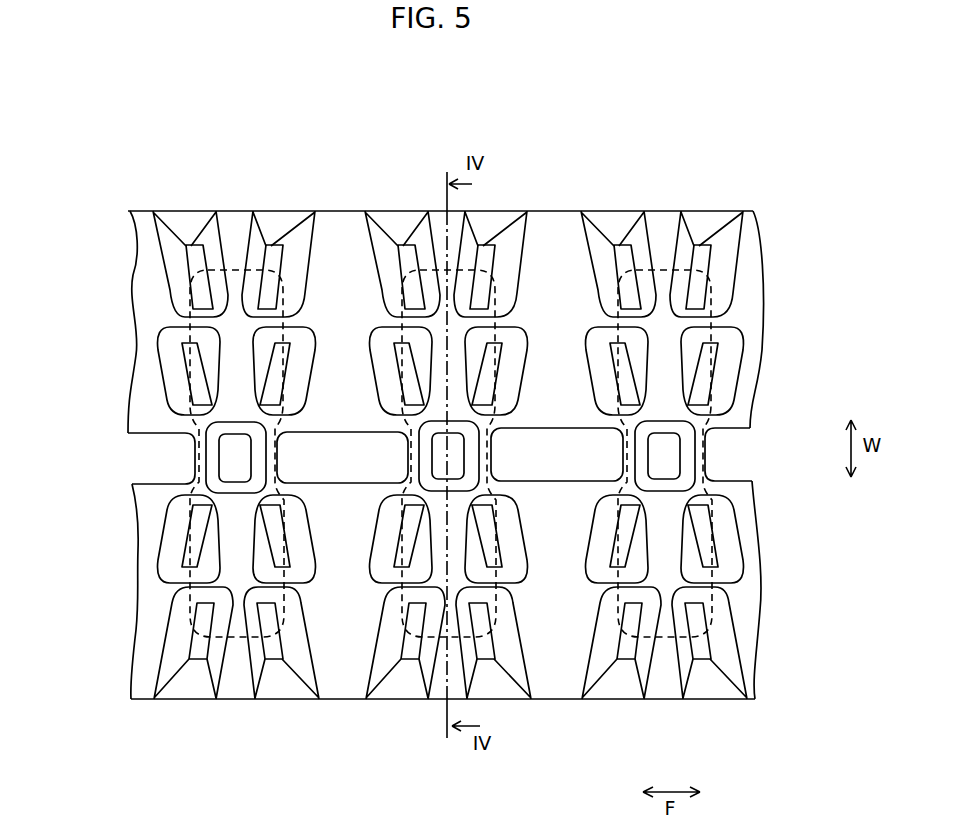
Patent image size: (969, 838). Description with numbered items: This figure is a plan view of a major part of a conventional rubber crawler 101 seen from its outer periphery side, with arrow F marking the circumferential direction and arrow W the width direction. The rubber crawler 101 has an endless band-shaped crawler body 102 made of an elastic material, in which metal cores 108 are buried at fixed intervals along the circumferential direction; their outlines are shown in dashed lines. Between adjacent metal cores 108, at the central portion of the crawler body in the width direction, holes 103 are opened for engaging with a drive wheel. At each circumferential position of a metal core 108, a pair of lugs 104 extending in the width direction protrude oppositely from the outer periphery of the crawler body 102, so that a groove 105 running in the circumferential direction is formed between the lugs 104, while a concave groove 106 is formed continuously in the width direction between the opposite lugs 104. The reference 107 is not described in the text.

The rubber crawler 101 is at (679, 204).
The crawler body 102 is at (337, 211).
The holes 103 is at (335, 445).
The lugs 104 is at (184, 252).
The groove 105 is at (180, 322).
The concave groove 106 is at (235, 232).
The groove 107 is at (346, 245).
The metal cores 108 is at (187, 617).